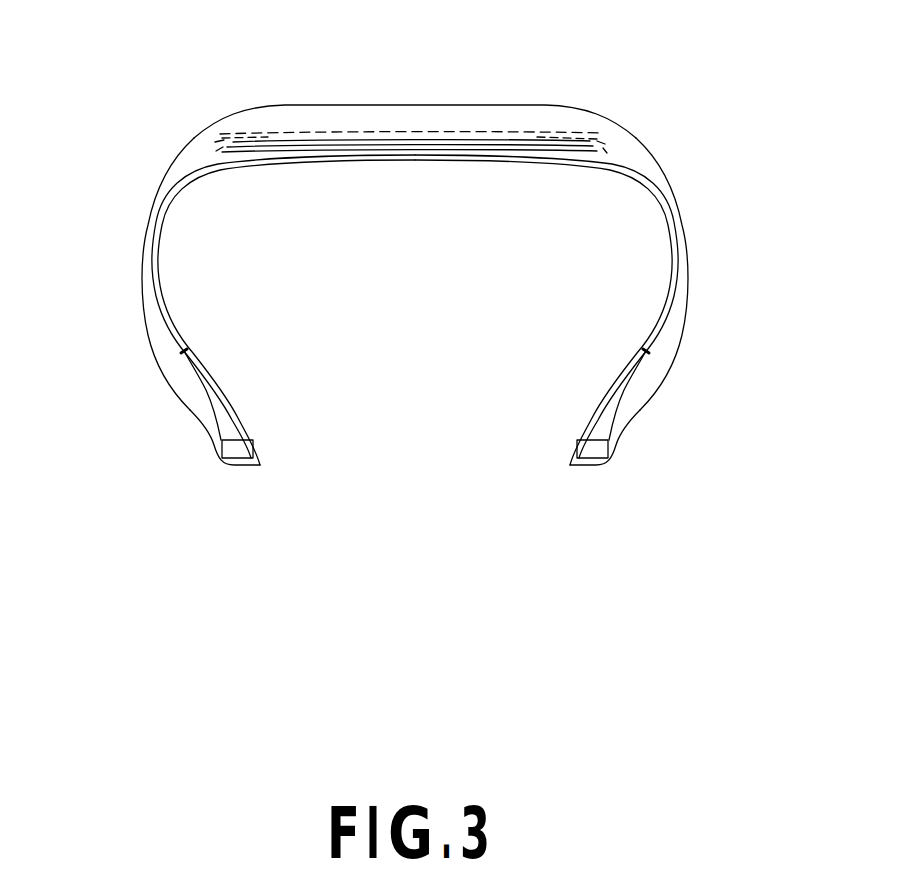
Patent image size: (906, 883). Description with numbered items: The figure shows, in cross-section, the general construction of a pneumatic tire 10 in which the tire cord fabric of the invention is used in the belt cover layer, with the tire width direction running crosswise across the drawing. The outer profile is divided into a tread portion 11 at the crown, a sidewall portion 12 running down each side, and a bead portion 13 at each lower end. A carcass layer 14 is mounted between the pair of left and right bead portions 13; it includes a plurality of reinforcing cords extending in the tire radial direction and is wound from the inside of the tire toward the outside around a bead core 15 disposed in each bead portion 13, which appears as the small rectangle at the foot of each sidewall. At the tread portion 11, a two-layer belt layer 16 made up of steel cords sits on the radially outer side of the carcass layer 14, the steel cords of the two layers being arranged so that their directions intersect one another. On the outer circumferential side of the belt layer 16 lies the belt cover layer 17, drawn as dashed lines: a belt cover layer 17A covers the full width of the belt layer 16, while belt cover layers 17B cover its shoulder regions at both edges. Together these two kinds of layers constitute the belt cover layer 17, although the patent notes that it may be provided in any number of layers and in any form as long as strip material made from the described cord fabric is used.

The pneumatic tire 10 is at (410, 263).
The tread portion 11 is at (548, 108).
The sidewall portion 12 is at (142, 278).
The bead portion 13 is at (411, 468).
The carcass layer 14 is at (670, 288).
The bead core 15 is at (206, 431).
The belt layer 16 is at (443, 147).
The belt cover layer 17 is at (411, 76).
The belt cover layer 17A is at (394, 134).
The belt cover layer 17B is at (472, 47).